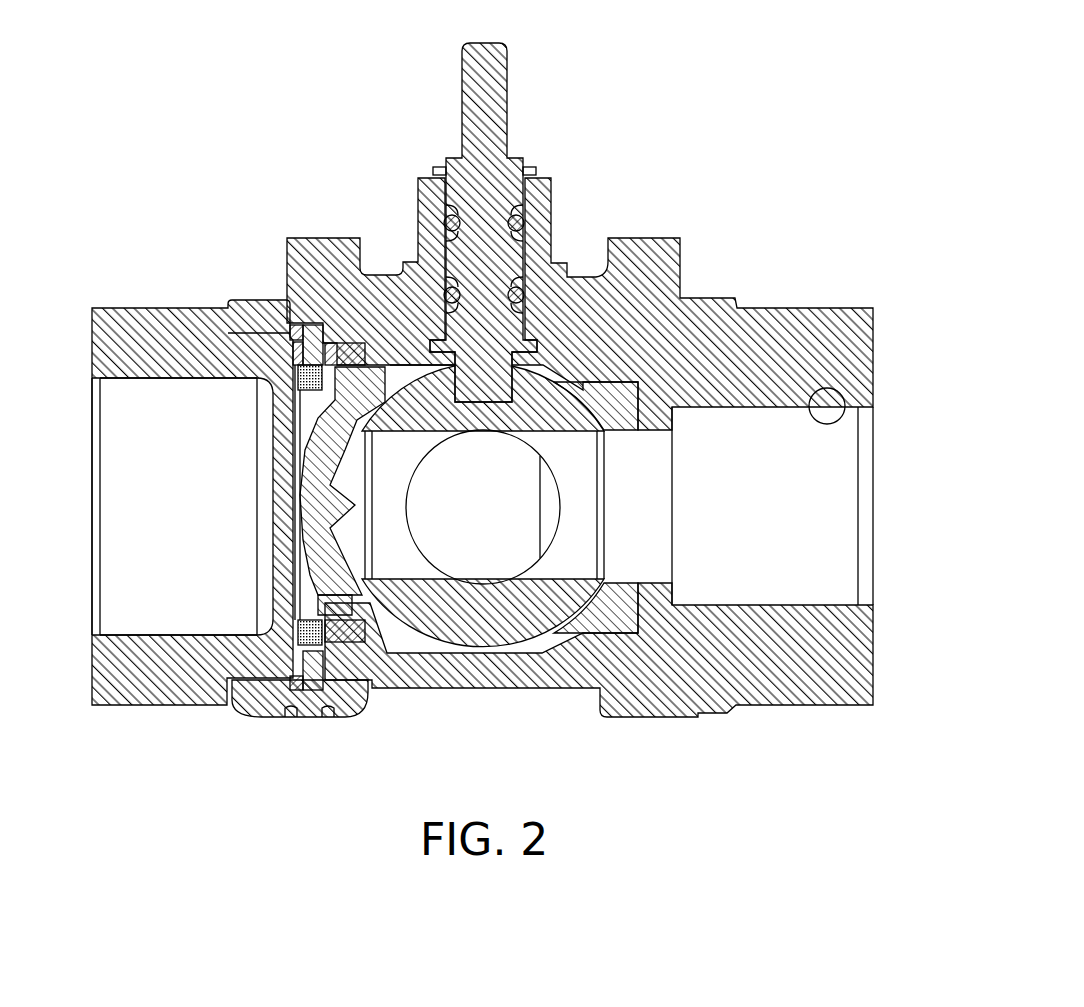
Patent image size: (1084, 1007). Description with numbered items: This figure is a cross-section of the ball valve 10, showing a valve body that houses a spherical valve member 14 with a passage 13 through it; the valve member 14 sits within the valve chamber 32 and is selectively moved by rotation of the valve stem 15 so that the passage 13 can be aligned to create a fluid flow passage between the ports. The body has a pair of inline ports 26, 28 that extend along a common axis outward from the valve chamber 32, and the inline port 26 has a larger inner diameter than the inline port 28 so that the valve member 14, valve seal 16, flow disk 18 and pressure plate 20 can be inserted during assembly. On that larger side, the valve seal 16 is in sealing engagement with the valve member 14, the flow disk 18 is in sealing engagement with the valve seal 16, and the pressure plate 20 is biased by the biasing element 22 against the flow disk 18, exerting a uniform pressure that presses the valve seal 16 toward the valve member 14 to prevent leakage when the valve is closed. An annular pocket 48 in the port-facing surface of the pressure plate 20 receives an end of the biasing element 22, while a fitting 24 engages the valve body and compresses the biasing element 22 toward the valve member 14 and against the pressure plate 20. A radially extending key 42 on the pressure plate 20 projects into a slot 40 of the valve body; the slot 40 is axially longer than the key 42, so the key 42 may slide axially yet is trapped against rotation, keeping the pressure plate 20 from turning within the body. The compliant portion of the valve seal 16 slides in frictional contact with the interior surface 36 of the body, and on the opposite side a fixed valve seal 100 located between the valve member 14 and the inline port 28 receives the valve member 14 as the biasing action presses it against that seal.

The ball valve 10 is at (730, 183).
The passage 13 is at (592, 505).
The valve member 14 is at (515, 612).
The valve stem 15 is at (510, 92).
The valve seal 16 is at (380, 652).
The flow disk 18 is at (312, 548).
The pressure plate 20 is at (323, 692).
The biasing element 22 is at (298, 340).
The fitting 24 is at (127, 692).
The inline port 26 is at (162, 328).
The inline port 28 is at (777, 320).
The valve chamber 32 is at (408, 364).
The interior surface 36 is at (827, 422).
The slot 40 is at (313, 327).
The radially extending key 42 is at (290, 323).
The annular pocket 48 is at (280, 398).
The fixed valve seal 100 is at (628, 634).